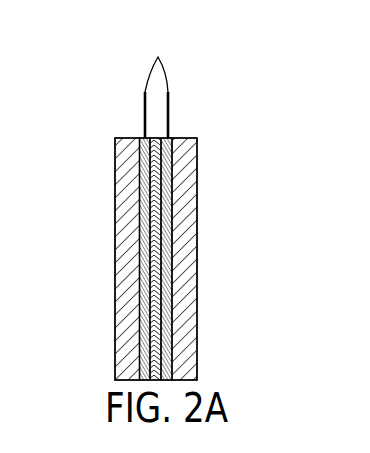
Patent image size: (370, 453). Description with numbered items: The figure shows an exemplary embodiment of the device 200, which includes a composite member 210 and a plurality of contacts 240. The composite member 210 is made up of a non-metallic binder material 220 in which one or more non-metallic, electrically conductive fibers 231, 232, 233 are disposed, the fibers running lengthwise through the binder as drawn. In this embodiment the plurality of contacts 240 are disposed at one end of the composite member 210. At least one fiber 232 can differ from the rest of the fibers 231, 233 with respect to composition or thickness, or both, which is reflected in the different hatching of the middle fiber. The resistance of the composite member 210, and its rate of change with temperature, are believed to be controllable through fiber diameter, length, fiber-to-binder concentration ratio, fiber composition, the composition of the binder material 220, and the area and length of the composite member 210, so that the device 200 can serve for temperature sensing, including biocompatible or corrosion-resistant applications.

The device 200 is at (104, 85).
The composite member 210 is at (207, 140).
The non-metallic binder material 220 is at (123, 193).
The non-metallic, electrically conductive fiber 231 is at (145, 232).
The non-metallic, electrically conductive fiber 232 is at (155, 280).
The non-metallic, electrically conductive fiber 233 is at (167, 328).
The contacts 240 is at (156, 85).